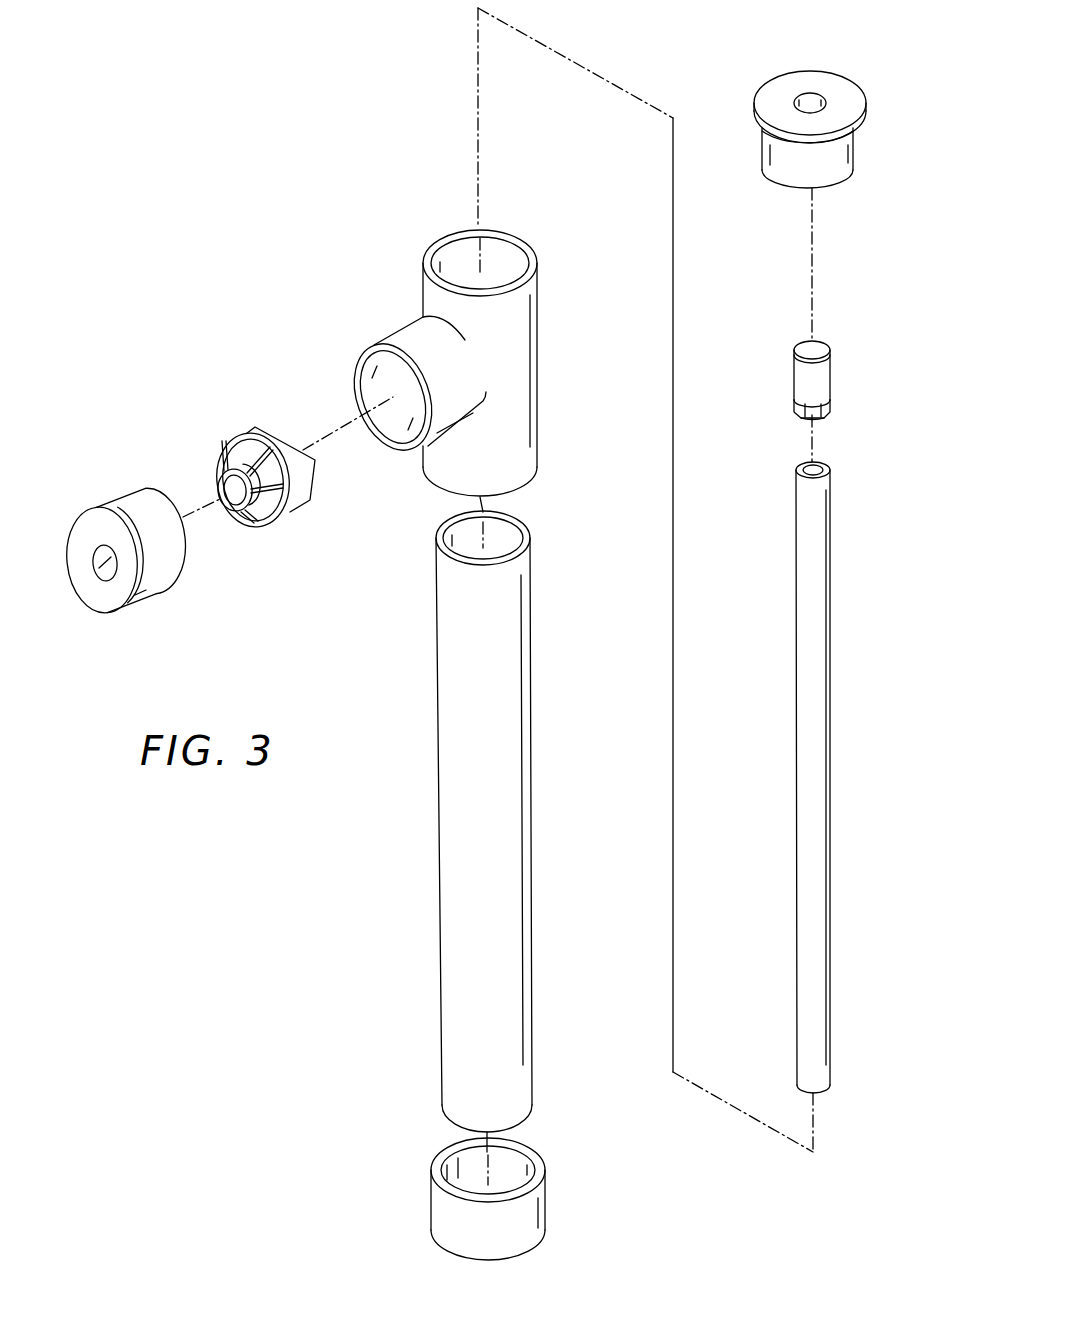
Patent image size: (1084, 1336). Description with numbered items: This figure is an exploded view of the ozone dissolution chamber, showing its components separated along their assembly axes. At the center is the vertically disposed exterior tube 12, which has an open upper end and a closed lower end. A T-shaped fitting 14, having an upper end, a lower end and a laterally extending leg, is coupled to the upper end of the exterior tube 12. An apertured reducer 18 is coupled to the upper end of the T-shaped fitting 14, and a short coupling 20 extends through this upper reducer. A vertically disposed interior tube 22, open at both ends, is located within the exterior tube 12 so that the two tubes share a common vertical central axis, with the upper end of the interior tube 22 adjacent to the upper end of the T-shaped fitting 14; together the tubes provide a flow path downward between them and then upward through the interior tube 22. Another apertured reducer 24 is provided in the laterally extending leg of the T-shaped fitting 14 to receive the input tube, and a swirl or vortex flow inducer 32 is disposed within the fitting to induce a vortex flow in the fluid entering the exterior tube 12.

The exterior tube 12 is at (465, 910).
The T-shaped fitting 14 is at (538, 357).
The apertured reducer 18 is at (838, 172).
The short coupling 20 is at (832, 378).
The interior tube 22 is at (822, 683).
The apertured reducer 24 is at (133, 510).
The vortex flow inducer 32 is at (303, 492).